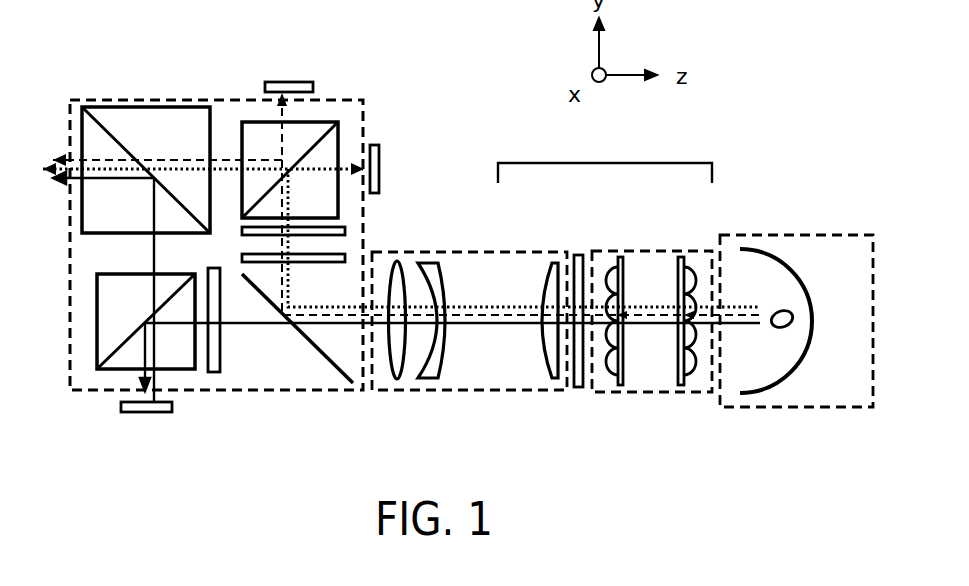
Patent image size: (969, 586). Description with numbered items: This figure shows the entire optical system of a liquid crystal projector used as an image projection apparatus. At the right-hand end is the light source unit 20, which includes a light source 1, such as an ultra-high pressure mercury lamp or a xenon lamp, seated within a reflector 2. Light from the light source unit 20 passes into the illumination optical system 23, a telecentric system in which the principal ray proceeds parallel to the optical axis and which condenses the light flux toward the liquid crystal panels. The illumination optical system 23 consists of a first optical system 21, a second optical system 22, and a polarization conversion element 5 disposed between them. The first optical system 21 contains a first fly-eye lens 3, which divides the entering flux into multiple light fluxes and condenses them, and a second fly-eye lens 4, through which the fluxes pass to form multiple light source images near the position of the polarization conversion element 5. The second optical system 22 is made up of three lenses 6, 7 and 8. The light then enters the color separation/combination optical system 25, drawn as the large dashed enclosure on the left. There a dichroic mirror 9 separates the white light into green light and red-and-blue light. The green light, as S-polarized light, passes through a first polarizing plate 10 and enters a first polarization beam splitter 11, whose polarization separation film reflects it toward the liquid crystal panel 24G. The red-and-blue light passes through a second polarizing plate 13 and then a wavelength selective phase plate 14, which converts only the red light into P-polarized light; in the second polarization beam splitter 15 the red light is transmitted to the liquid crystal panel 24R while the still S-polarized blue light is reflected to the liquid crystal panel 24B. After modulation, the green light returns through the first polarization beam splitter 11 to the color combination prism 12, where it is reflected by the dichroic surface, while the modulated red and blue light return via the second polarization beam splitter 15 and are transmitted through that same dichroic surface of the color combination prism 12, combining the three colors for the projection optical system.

The light source 1 is at (784, 325).
The reflector 2 is at (770, 253).
The first fly-eye lens 3 is at (685, 260).
The second fly-eye lens 4 is at (624, 260).
The polarization conversion element 5 is at (584, 256).
The lens 6 is at (548, 380).
The lens 7 is at (425, 383).
The lens 8 is at (388, 383).
The dichroic mirror 9 is at (332, 368).
The first polarizing plate 10 is at (215, 372).
The first polarization beam splitter 11 is at (110, 293).
The color combination prism 12 is at (145, 120).
The second polarizing plate 13 is at (345, 258).
The wavelength selective phase plate 14 is at (345, 230).
The second polarization beam splitter 15 is at (340, 132).
The light source unit 20 is at (783, 407).
The first optical system 21 is at (660, 250).
The second optical system 22 is at (490, 251).
The illumination optical system 23 is at (605, 156).
The liquid crystal panel for R 24R is at (284, 87).
The liquid crystal panel for G 24G is at (137, 407).
The liquid crystal panel for B 24B is at (380, 165).
The color separation/combination optical system 25 is at (218, 100).